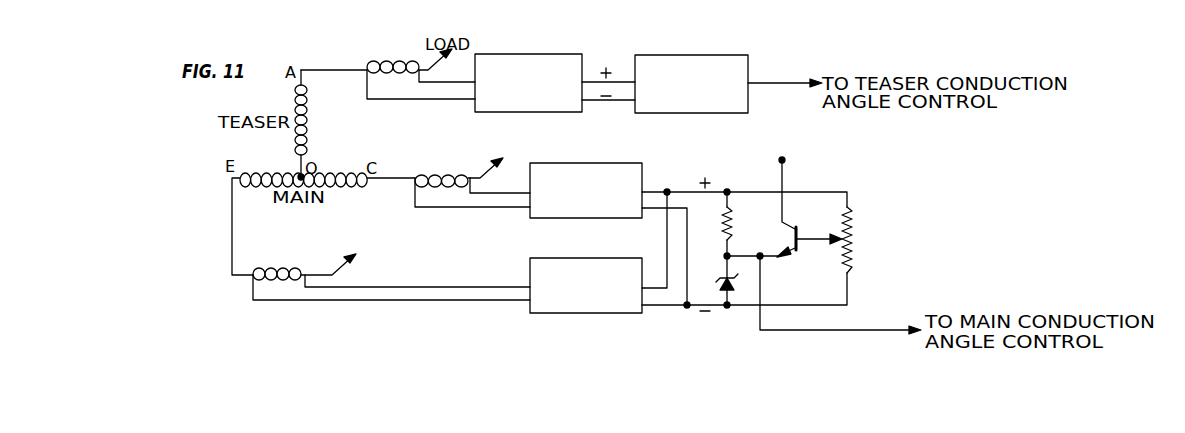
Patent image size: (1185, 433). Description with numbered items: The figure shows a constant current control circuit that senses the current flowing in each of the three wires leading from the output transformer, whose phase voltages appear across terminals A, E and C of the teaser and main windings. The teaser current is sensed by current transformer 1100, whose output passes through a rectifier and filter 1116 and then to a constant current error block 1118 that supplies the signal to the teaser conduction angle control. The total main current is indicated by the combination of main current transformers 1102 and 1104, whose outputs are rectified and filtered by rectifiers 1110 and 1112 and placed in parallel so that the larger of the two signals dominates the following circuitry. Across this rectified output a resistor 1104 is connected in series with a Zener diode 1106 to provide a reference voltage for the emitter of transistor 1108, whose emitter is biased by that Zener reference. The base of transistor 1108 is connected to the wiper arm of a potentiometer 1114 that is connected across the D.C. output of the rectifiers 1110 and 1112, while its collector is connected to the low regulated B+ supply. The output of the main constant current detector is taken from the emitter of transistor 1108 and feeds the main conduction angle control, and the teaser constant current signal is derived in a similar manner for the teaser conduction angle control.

The current transformer 1100 is at (403, 64).
The main current transformer 1102 is at (457, 176).
The main current transformer / resistor 1104 is at (302, 268).
The Zener diode 1106 is at (721, 280).
The transistor 1108 is at (791, 245).
The rectifier 1110 is at (578, 163).
The rectifier 1112 is at (578, 258).
The potentiometer 1114 is at (853, 222).
The rectifier and filter 1116 is at (518, 55).
The constant current error circuit 1118 is at (668, 56).